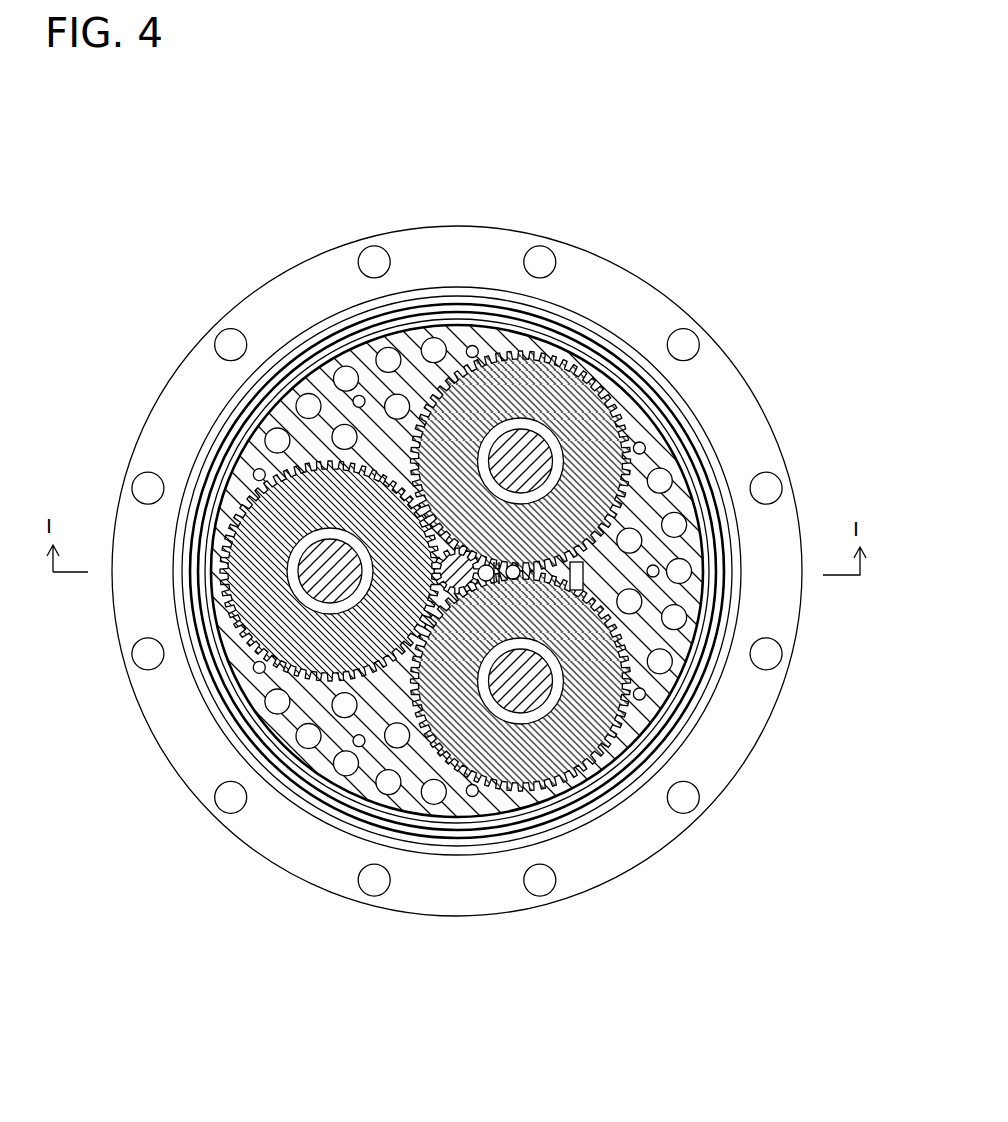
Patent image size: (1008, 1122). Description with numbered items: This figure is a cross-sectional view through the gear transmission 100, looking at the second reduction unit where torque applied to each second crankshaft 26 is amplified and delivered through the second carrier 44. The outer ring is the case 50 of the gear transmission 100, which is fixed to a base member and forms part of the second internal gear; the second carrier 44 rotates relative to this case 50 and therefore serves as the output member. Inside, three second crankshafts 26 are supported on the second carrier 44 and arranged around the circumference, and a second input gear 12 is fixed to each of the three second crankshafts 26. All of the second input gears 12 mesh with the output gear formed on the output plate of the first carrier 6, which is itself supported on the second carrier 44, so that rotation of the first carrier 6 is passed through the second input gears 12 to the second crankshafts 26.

The gear transmission 100 is at (606, 142).
The case 50 is at (728, 402).
The second carrier 44 is at (657, 640).
The second crankshaft 26 is at (520, 461).
The second input gear 12 is at (593, 418).
The first carrier 6 is at (395, 480).